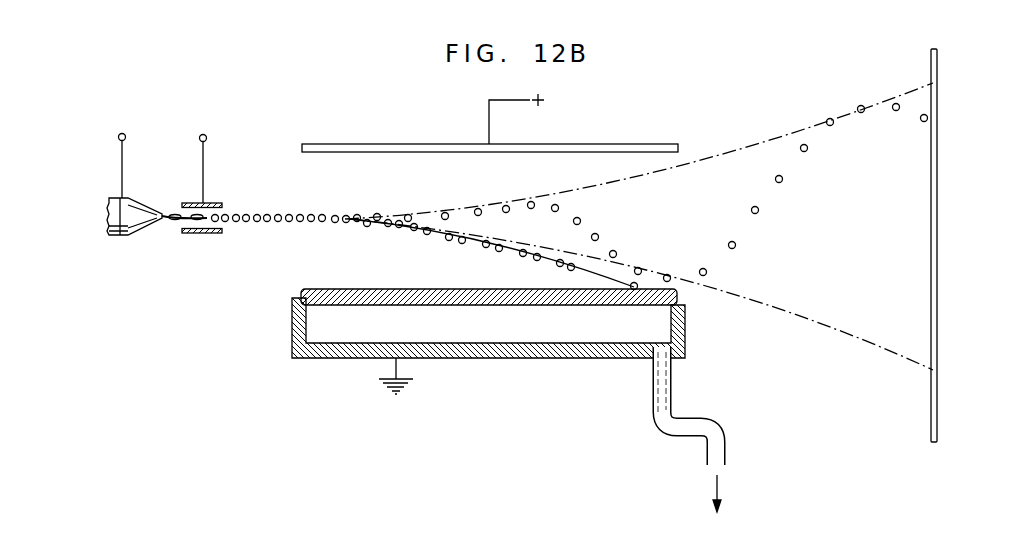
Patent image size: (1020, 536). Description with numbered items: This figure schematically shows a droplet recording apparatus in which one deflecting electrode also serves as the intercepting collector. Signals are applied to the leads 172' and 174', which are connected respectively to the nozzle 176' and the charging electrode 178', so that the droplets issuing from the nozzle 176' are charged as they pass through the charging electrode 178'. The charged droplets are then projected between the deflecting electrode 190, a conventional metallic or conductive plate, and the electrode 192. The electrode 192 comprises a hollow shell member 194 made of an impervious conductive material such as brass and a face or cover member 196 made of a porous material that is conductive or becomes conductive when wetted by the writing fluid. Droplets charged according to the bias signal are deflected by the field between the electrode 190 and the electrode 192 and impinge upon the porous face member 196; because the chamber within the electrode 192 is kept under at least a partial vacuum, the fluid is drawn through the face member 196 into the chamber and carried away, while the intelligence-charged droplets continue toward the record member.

The lead 172' is at (152, 164).
The lead 174' is at (236, 163).
The nozzle 176' is at (156, 245).
The charging electrode 178' is at (208, 247).
The deflecting electrode 190 is at (420, 143).
The electrode 192 is at (481, 377).
The hollow shell member 194 is at (484, 359).
The face member 196 is at (403, 288).